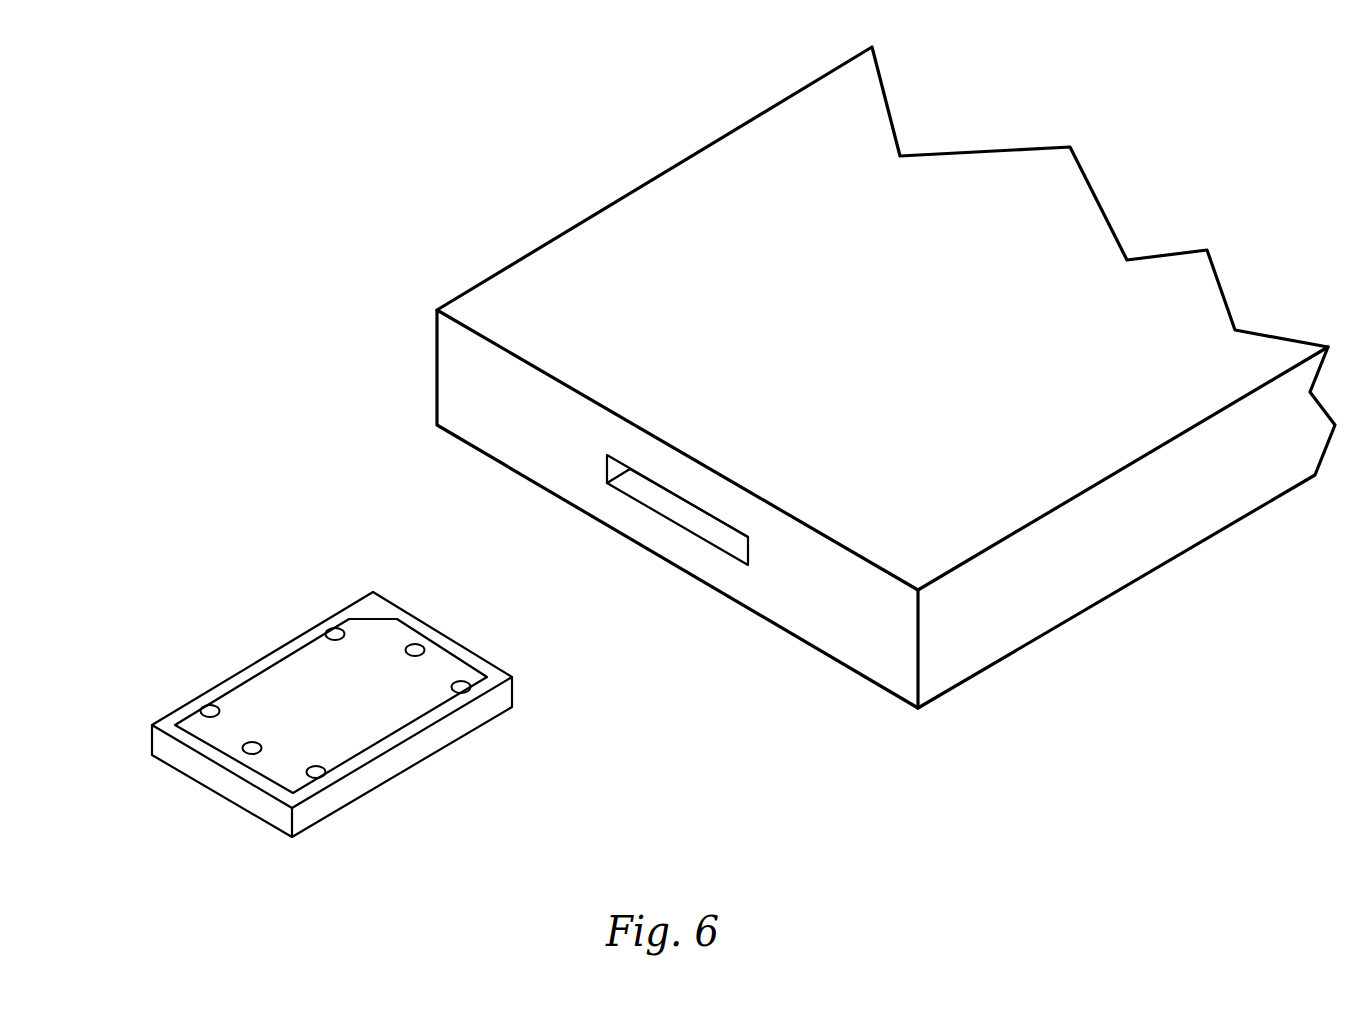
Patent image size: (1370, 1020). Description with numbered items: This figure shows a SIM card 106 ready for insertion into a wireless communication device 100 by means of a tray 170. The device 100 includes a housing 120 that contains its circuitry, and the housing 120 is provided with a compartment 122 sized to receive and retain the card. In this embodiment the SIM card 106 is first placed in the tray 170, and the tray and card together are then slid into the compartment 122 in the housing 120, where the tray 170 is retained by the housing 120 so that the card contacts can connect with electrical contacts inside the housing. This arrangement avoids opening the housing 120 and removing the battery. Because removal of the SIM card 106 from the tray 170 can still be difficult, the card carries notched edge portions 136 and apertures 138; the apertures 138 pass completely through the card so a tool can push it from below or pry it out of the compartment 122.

The wireless communication device 100 is at (1185, 833).
The housing 120 is at (886, 377).
The compartment 122 is at (685, 510).
The SIM card 106 is at (349, 742).
The tray 170 is at (260, 818).
The notched edge portions 136 is at (333, 628).
The apertures 138 is at (417, 645).